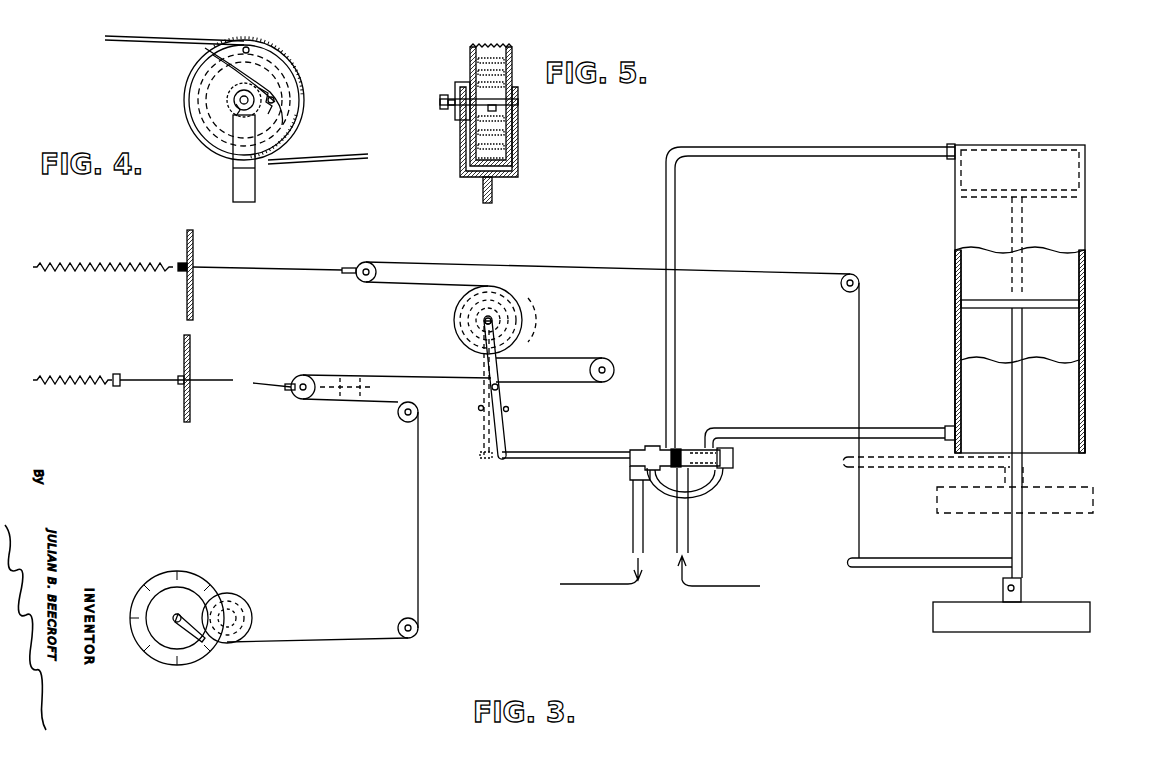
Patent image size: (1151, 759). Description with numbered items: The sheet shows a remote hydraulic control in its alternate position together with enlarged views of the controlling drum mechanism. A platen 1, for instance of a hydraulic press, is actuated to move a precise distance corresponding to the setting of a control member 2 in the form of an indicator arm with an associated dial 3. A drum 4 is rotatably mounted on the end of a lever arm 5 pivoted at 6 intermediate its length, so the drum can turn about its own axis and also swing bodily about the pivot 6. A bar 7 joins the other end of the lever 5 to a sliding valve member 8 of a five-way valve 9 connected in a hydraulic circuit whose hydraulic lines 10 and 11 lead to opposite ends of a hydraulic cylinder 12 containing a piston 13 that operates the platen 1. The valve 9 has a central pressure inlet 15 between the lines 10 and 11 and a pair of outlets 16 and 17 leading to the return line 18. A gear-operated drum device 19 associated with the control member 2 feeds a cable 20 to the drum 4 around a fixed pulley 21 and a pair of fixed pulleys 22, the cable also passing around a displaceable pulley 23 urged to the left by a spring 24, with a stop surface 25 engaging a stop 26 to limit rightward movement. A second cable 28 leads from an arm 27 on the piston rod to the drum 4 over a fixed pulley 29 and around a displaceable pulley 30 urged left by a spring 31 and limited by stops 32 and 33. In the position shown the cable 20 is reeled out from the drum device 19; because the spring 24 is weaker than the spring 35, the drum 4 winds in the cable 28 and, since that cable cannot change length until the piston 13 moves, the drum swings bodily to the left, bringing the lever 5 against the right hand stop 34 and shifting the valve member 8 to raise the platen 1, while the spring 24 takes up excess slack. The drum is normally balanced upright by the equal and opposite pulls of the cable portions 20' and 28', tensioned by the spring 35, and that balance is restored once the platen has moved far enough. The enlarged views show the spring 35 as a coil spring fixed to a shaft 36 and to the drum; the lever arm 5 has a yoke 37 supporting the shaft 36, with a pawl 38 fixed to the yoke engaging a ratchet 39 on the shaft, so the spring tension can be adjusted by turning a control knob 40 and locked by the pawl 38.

In FIG. 3, the platen 1 is at (1080, 616).
In FIG. 3, the control member 2 is at (195, 644).
In FIG. 3, the dial 3 is at (190, 572).
In FIG. 3, the drum 4 is at (523, 305).
In FIG. 4, the lever arm 5 is at (230, 28).
In FIG. 3, the lever arm 5 is at (475, 370).
In FIG. 3, the pivot 6 is at (490, 387).
In FIG. 3, the bar 7 is at (545, 462).
In FIG. 3, the sliding valve member 8 is at (686, 448).
In FIG. 3, the five-way valve 9 is at (640, 446).
In FIG. 3, the hydraulic line 10 is at (832, 146).
In FIG. 3, the hydraulic line 11 is at (806, 428).
In FIG. 3, the hydraulic cylinder 12 is at (1085, 200).
In FIG. 3, the piston 13 is at (1085, 178).
In FIG. 3, the pressure inlet 15 is at (688, 527).
In FIG. 3, the outlet 16 is at (722, 484).
In FIG. 3, the outlet 17 is at (630, 478).
In FIG. 3, the return line 18 is at (633, 528).
In FIG. 3, the gear-operated drum device 19 is at (248, 600).
In FIG. 4, the cable 20 is at (318, 147).
In FIG. 3, the cable 20 is at (338, 527).
In FIG. 3, the cable portion 20' is at (549, 354).
In FIG. 3, the fixed pulley 21 is at (614, 362).
In FIG. 3, the fixed pulleys 22 is at (398, 414).
In FIG. 3, the displaceable pulley 23 is at (308, 375).
In FIG. 3, the spring 24 is at (74, 380).
In FIG. 3, the stop surface 25 is at (190, 360).
In FIG. 3, the stop 26 is at (178, 378).
In FIG. 3, the arm 27 is at (905, 567).
In FIG. 3, the second cable 28 is at (521, 257).
In FIG. 4, the cable portion 28' is at (174, 53).
In FIG. 3, the cable portion 28' is at (427, 295).
In FIG. 3, the fixed pulley 29 is at (859, 283).
In FIG. 3, the displaceable pulley 30 is at (372, 263).
In FIG. 3, the spring 31 is at (80, 266).
In FIG. 3, the stop 32 is at (178, 264).
In FIG. 3, the stop 33 is at (193, 252).
In FIG. 3, the stop 34 is at (478, 410).
In FIG. 4, the spring 35 is at (292, 70).
In FIG. 5, the spring 35 is at (470, 66).
In FIG. 3, the spring 35 is at (460, 330).
In FIG. 4, the shaft 36 is at (240, 100).
In FIG. 5, the shaft 36 is at (518, 102).
In FIG. 4, the yoke 37 is at (236, 150).
In FIG. 5, the yoke 37 is at (460, 160).
In FIG. 4, the pawl 38 is at (275, 86).
In FIG. 4, the ratchet 39 is at (235, 91).
In FIG. 5, the ratchet 39 is at (455, 87).
In FIG. 4, the control knob 40 is at (238, 104).
In FIG. 5, the control knob 40 is at (440, 108).